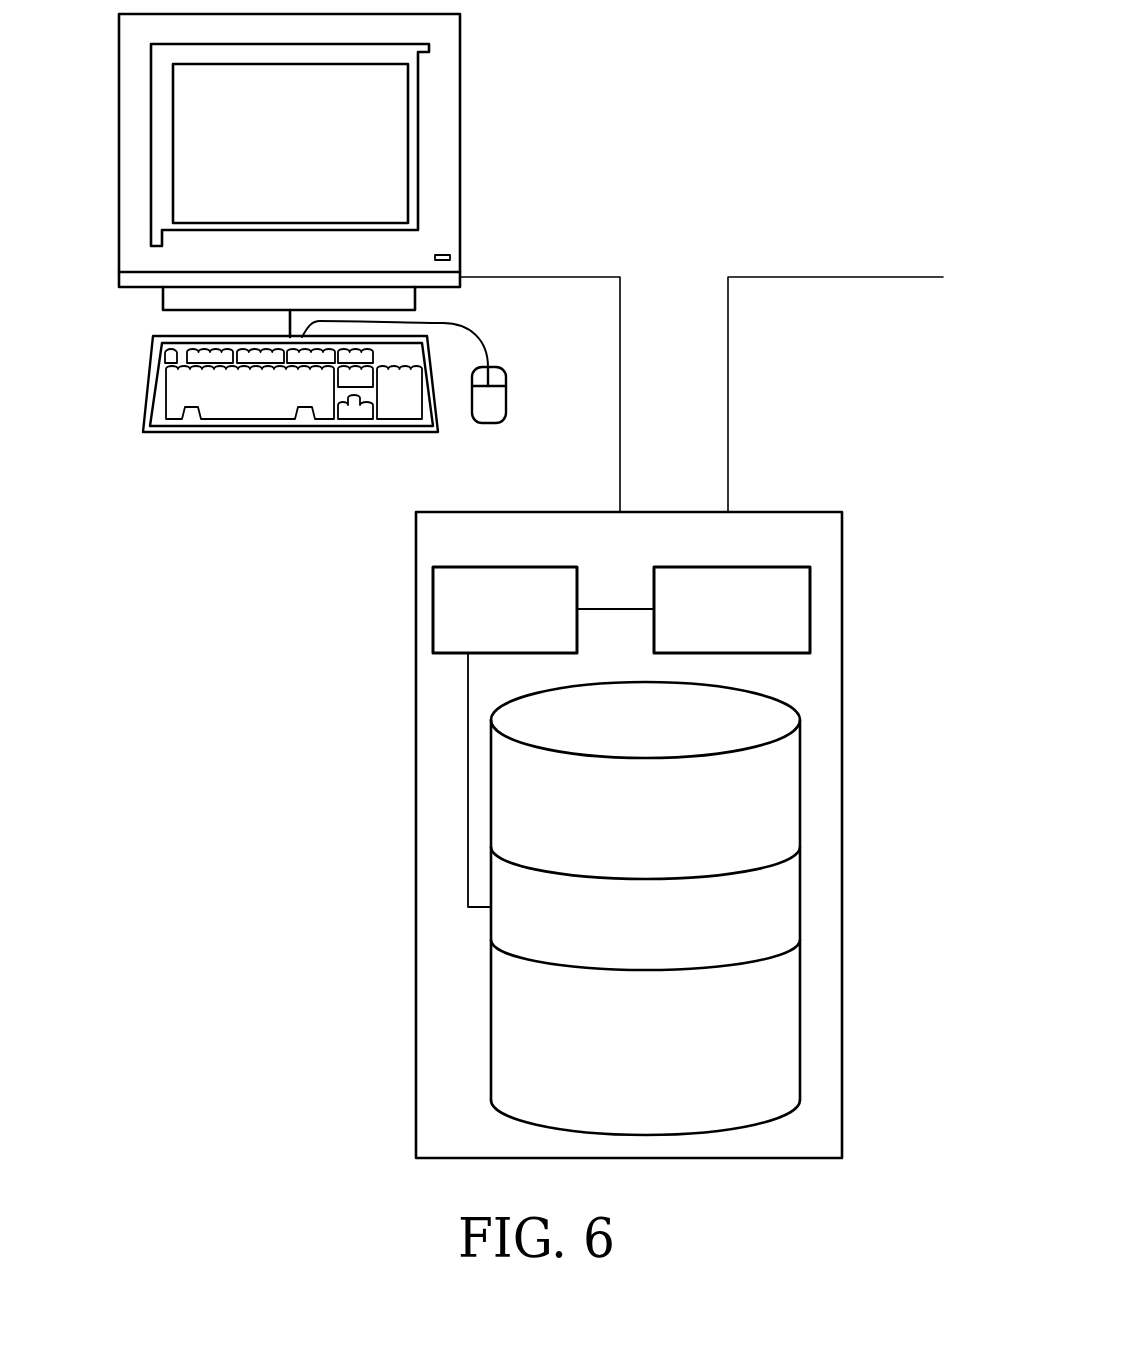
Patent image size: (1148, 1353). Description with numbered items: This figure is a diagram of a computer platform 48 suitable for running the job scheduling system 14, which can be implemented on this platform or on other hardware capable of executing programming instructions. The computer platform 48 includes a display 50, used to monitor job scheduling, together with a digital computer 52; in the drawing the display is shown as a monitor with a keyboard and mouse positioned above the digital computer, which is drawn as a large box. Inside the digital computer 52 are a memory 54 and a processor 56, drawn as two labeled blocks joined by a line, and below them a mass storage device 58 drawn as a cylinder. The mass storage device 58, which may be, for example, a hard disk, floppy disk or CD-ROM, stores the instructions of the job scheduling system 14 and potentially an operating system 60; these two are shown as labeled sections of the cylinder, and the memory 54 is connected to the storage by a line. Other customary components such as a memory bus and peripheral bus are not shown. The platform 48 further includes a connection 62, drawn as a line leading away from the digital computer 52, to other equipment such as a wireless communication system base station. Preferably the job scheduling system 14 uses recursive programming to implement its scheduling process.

The computer platform 48 is at (547, 57).
The display 50 is at (461, 145).
The digital computer 52 is at (525, 512).
The memory 54 is at (520, 567).
The processor 56 is at (752, 567).
The mass storage device 58 is at (800, 782).
The job scheduling system 14 is at (800, 892).
The operating system 60 is at (800, 1008).
The connection 62 is at (770, 277).